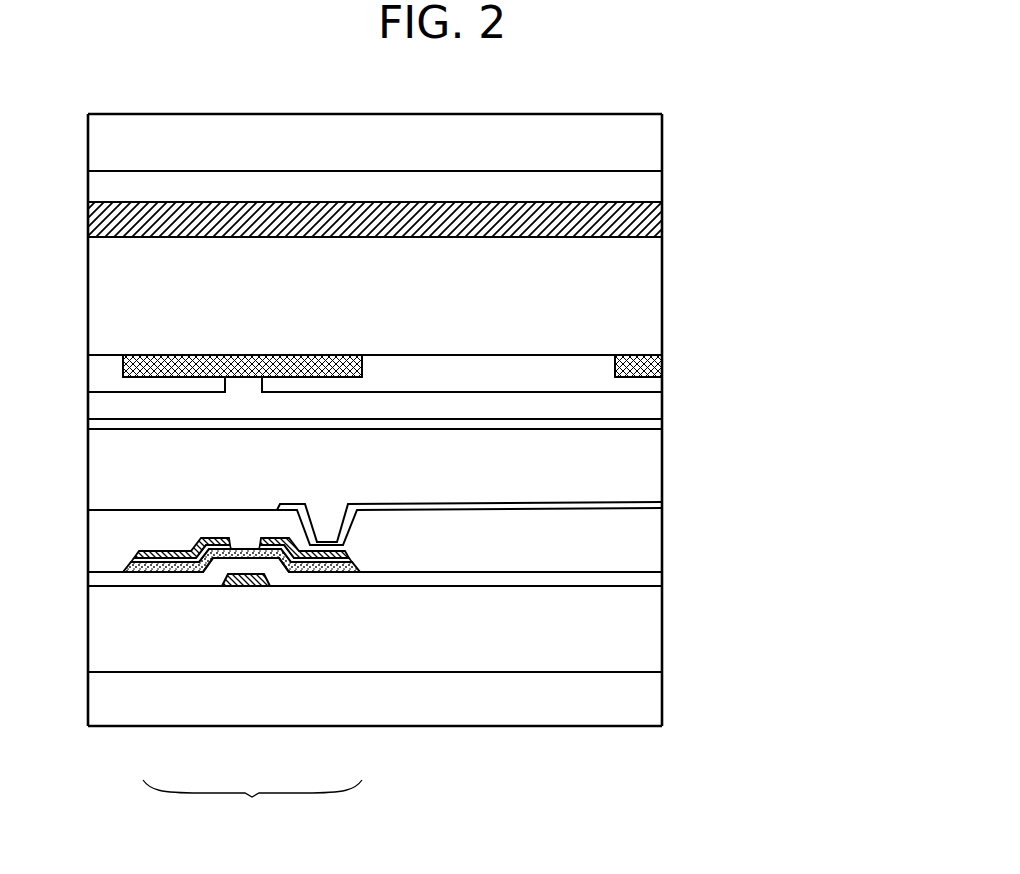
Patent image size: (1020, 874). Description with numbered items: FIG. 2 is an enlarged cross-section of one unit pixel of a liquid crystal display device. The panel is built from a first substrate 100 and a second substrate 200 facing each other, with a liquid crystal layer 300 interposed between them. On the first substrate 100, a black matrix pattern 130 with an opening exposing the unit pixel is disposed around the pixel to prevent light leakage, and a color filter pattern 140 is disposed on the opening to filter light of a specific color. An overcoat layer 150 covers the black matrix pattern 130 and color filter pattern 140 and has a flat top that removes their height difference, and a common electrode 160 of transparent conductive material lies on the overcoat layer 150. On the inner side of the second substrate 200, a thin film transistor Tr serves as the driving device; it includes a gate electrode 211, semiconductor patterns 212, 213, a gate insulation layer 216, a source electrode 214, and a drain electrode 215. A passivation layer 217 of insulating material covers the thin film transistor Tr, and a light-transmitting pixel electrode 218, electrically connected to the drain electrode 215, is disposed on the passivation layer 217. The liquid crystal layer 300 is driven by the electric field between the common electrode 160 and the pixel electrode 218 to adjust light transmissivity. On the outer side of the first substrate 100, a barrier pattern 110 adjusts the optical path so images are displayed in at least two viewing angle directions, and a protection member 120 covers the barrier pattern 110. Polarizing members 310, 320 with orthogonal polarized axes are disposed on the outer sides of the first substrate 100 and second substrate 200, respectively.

The polarizing member 310 is at (655, 133).
The protection member 120 is at (655, 197).
The barrier pattern 110 is at (655, 225).
The first substrate 100 is at (655, 293).
The black matrix pattern 130 is at (655, 366).
The color filter pattern 140 is at (655, 385).
The overcoat layer 150 is at (657, 404).
The common electrode 160 is at (657, 421).
The liquid crystal layer 300 is at (652, 462).
The pixel electrode 218 is at (650, 503).
The passivation layer 217 is at (655, 541).
The gate insulation layer 216 is at (657, 578).
The second substrate 200 is at (657, 630).
The polarizing member 320 is at (657, 695).
The gate electrode 211 is at (247, 587).
The semiconductor pattern 212 is at (198, 572).
The semiconductor pattern 213 is at (168, 566).
The source electrode 214 is at (137, 566).
The drain electrode 215 is at (327, 572).
The thin film transistor Tr is at (252, 803).